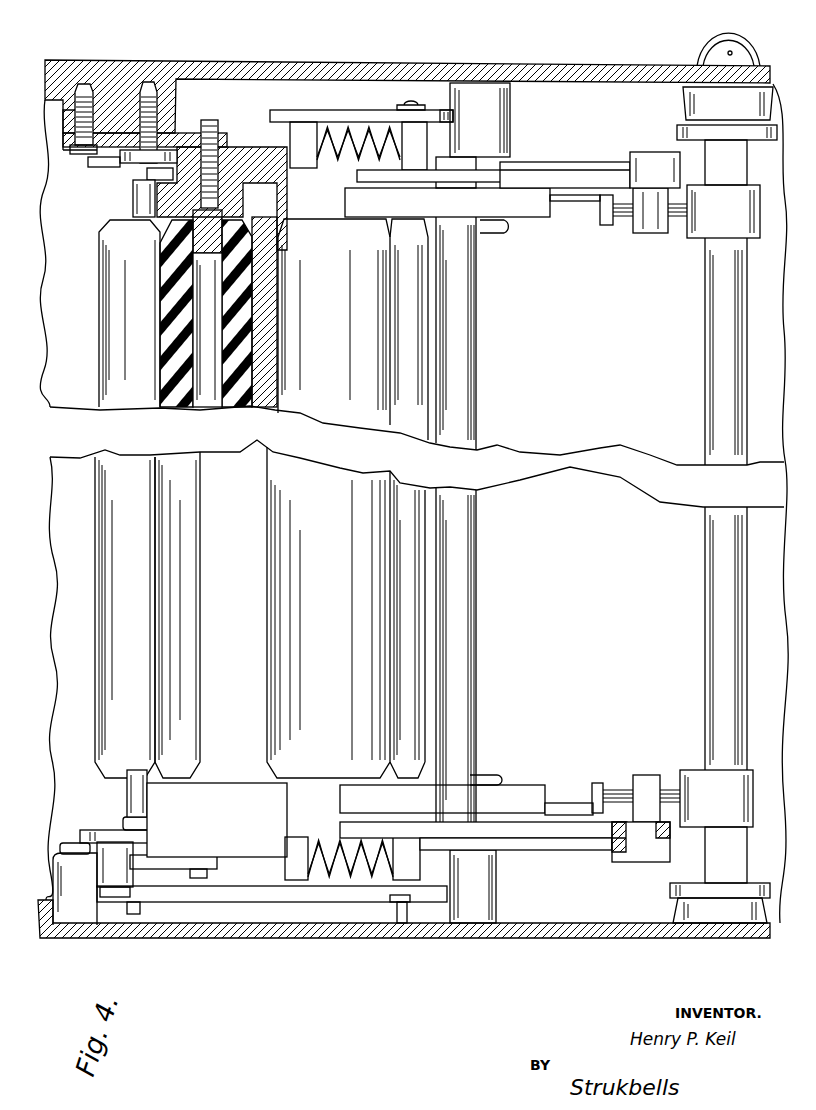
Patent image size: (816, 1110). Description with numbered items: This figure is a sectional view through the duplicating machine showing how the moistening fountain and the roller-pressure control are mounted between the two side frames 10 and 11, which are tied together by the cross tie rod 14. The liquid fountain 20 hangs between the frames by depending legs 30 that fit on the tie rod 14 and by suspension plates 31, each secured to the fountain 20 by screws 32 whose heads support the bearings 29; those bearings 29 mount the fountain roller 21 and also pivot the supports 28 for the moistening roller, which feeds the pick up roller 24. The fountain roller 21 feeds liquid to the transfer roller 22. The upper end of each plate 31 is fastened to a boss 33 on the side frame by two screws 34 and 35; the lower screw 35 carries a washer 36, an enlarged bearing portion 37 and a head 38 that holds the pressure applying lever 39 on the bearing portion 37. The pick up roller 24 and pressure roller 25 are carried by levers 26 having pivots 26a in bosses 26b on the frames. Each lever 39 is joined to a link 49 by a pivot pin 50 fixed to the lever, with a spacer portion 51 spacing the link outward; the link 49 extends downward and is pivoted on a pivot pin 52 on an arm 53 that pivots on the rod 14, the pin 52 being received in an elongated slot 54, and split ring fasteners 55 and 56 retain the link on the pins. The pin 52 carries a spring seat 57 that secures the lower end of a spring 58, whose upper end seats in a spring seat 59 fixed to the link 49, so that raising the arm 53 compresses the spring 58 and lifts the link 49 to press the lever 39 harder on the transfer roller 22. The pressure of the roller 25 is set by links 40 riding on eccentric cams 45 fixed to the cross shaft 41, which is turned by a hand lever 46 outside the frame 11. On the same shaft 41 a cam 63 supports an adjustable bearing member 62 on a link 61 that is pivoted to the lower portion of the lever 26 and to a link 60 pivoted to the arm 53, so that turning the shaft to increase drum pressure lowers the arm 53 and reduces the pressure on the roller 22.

The side frame 10 is at (295, 938).
The side frame 11 is at (370, 66).
The cross tie rod 14 is at (467, 337).
The liquid fountain 20 is at (160, 617).
The fountain roller 21 is at (165, 363).
The transfer roller 22 is at (141, 499).
The pick up roller 24 is at (328, 498).
The pressure roller 25 is at (407, 498).
The lever 26 is at (572, 201).
The pivot 26a is at (495, 233).
The boss 26b is at (503, 130).
The support 28 is at (145, 235).
The bearing 29 is at (240, 150).
The depending leg 30 is at (533, 212).
The suspension plate 31 is at (183, 133).
The screw 32 is at (216, 121).
The boss 33 is at (66, 115).
The screw 34 is at (80, 88).
The screw 35 is at (150, 88).
The washer 36 is at (140, 160).
The bearing portion 37 is at (150, 173).
The head 38 is at (140, 214).
The pressure applying lever 39 is at (87, 162).
The link 40 is at (680, 132).
The cross shaft 41 is at (720, 318).
The eccentric cam 45 is at (757, 140).
The hand lever 46 is at (720, 40).
The link 49 is at (312, 110).
The pivot pin 50 is at (113, 900).
The spacer portion 51 is at (103, 873).
The pivot pin 52 is at (405, 105).
The arm 53 is at (490, 175).
The elongated slot 54 is at (72, 152).
The split ring fastener 55 is at (150, 898).
The split ring fastener 56 is at (450, 100).
The spring seat 57 is at (407, 501).
The spring 58 is at (323, 160).
The spring seat 59 is at (297, 501).
The link 60 is at (600, 162).
The link 61 is at (690, 170).
The adjustable bearing member 62 is at (637, 234).
The cam 63 is at (720, 506).